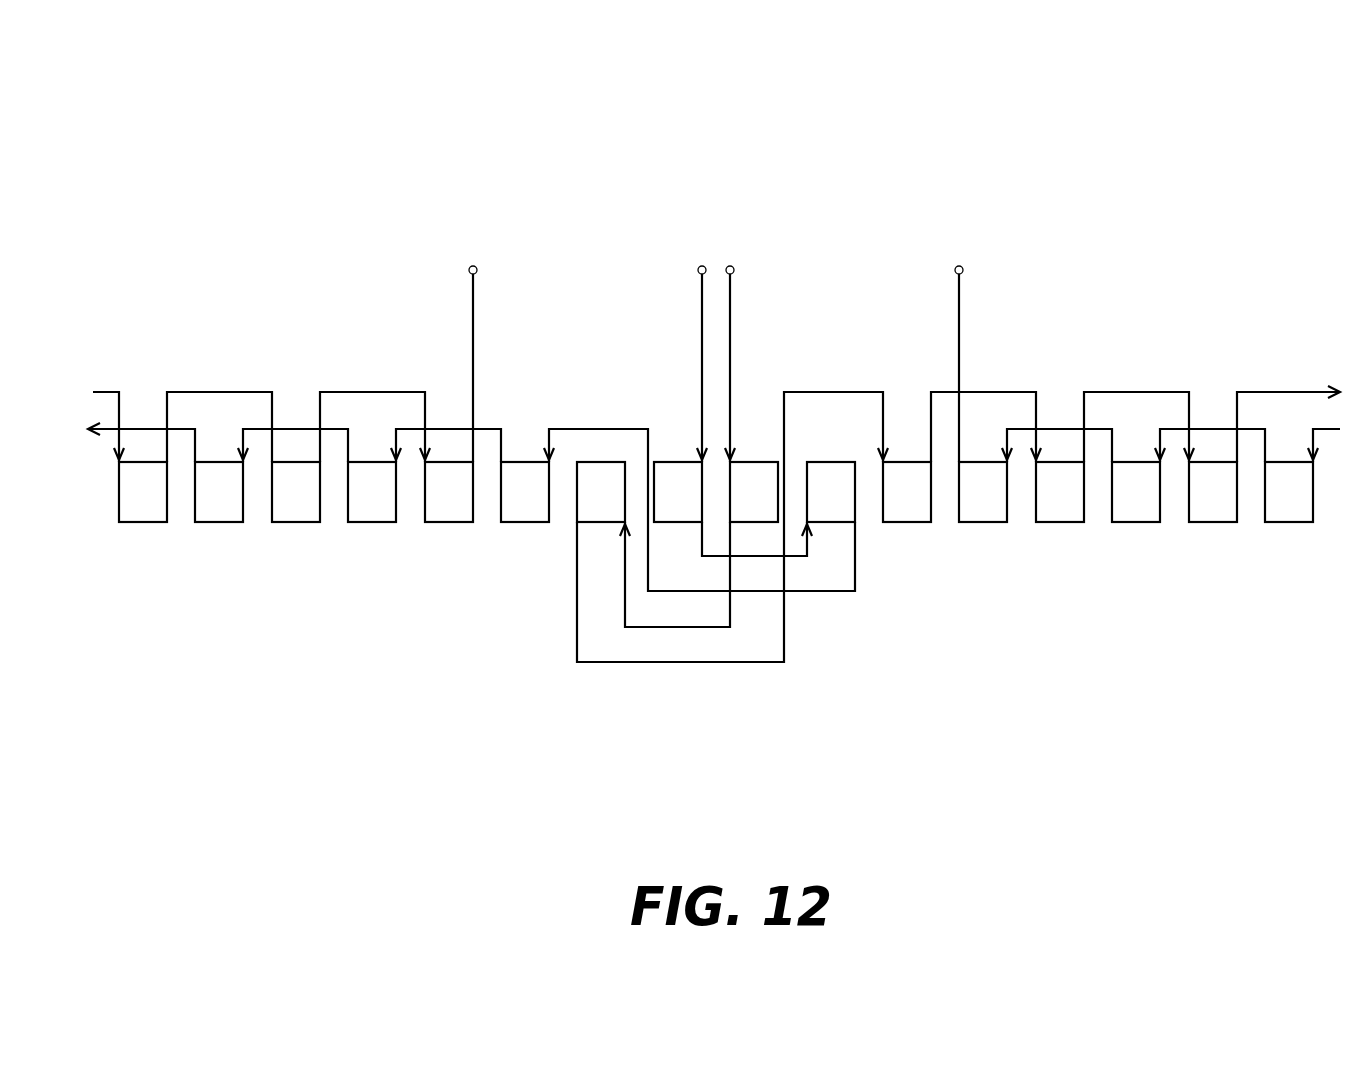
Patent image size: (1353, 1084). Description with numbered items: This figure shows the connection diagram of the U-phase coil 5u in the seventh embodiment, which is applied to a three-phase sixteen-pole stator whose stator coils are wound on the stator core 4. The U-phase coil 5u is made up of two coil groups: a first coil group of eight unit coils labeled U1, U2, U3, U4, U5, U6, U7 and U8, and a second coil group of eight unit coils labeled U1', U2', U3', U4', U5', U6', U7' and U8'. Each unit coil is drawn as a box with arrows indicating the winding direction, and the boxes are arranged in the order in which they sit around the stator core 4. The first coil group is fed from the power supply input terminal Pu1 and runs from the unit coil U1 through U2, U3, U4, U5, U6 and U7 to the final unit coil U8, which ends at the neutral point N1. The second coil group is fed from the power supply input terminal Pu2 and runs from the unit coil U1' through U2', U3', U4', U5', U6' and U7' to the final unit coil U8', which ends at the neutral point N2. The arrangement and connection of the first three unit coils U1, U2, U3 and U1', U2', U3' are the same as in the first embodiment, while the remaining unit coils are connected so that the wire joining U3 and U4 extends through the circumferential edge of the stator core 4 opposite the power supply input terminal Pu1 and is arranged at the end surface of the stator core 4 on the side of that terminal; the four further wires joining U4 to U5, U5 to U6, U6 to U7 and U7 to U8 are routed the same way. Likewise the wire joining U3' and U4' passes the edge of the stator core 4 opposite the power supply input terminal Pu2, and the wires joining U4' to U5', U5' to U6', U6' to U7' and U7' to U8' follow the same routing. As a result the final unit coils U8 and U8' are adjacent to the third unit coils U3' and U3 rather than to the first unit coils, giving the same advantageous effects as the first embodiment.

The U-phase coil 5u is at (864, 202).
The stator core 4 is at (490, 490).
The neutral point N1 is at (959, 265).
The neutral point N2 is at (474, 265).
The power supply input terminal Pu1 is at (702, 265).
The power supply input terminal Pu2 is at (730, 265).
The unit coil U1 is at (678, 445).
The unit coil U1' is at (755, 445).
The unit coil U2 is at (831, 555).
The unit coil U2' is at (602, 588).
The unit coil U3 is at (525, 537).
The unit coil U3' is at (907, 551).
The unit coil U4 is at (372, 536).
The unit coil U4' is at (1060, 548).
The unit coil U5 is at (219, 536).
The unit coil U5' is at (1213, 549).
The unit coil U6 is at (1289, 556).
The unit coil U6' is at (143, 535).
The unit coil U7 is at (1136, 551).
The unit coil U7' is at (296, 536).
The unit coil U8 is at (983, 550).
The unit coil U8' is at (449, 536).